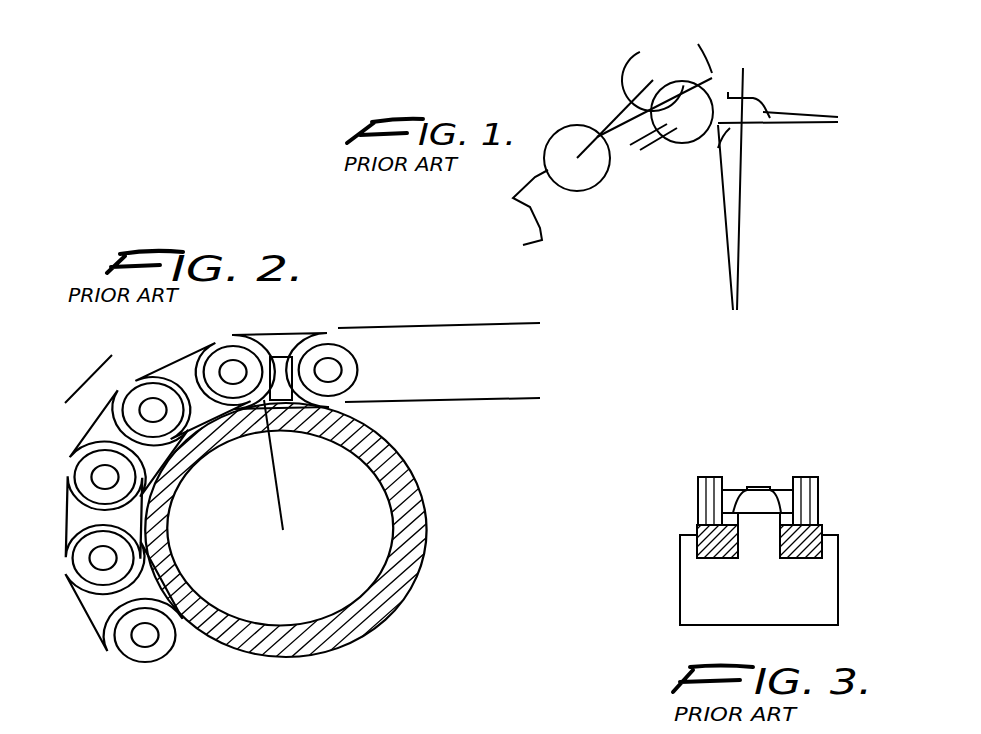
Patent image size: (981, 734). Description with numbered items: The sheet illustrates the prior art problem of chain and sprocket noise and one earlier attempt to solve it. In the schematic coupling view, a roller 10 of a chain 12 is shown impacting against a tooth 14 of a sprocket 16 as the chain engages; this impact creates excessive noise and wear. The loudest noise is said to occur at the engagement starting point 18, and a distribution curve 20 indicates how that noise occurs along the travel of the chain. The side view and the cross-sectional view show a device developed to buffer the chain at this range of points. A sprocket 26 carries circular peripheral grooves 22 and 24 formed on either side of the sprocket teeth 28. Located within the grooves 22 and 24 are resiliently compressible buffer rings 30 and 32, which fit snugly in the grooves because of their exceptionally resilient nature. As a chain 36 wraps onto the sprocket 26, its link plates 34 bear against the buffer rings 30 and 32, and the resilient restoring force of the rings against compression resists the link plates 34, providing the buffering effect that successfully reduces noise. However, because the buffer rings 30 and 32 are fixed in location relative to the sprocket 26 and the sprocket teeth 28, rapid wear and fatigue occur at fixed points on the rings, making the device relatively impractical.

In FIG. 1, the roller 10 is at (558, 131).
In FIG. 1, the chain 12 is at (650, 112).
In FIG. 1, the tooth 14 is at (762, 100).
In FIG. 1, the sprocket 16 is at (523, 245).
In FIG. 1, the engagement starting point 18 is at (718, 148).
In FIG. 1, the distribution curve 20 is at (728, 92).
In FIG. 3, the circular peripheral groove 22 is at (710, 547).
In FIG. 3, the circular peripheral groove 24 is at (813, 552).
In FIG. 2, the sprocket 26 is at (360, 489).
In FIG. 3, the sprocket 26 is at (838, 583).
In FIG. 2, the sprocket teeth 28 is at (281, 356).
In FIG. 3, the sprocket teeth 28 is at (755, 487).
In FIG. 2, the buffer ring 30 is at (383, 440).
In FIG. 3, the buffer ring 30 is at (700, 528).
In FIG. 3, the buffer ring 32 is at (820, 527).
In FIG. 2, the link plates 34 is at (253, 338).
In FIG. 3, the link plates 34 is at (702, 477).
In FIG. 2, the chain 36 is at (340, 333).
In FIG. 3, the chain 36 is at (817, 482).